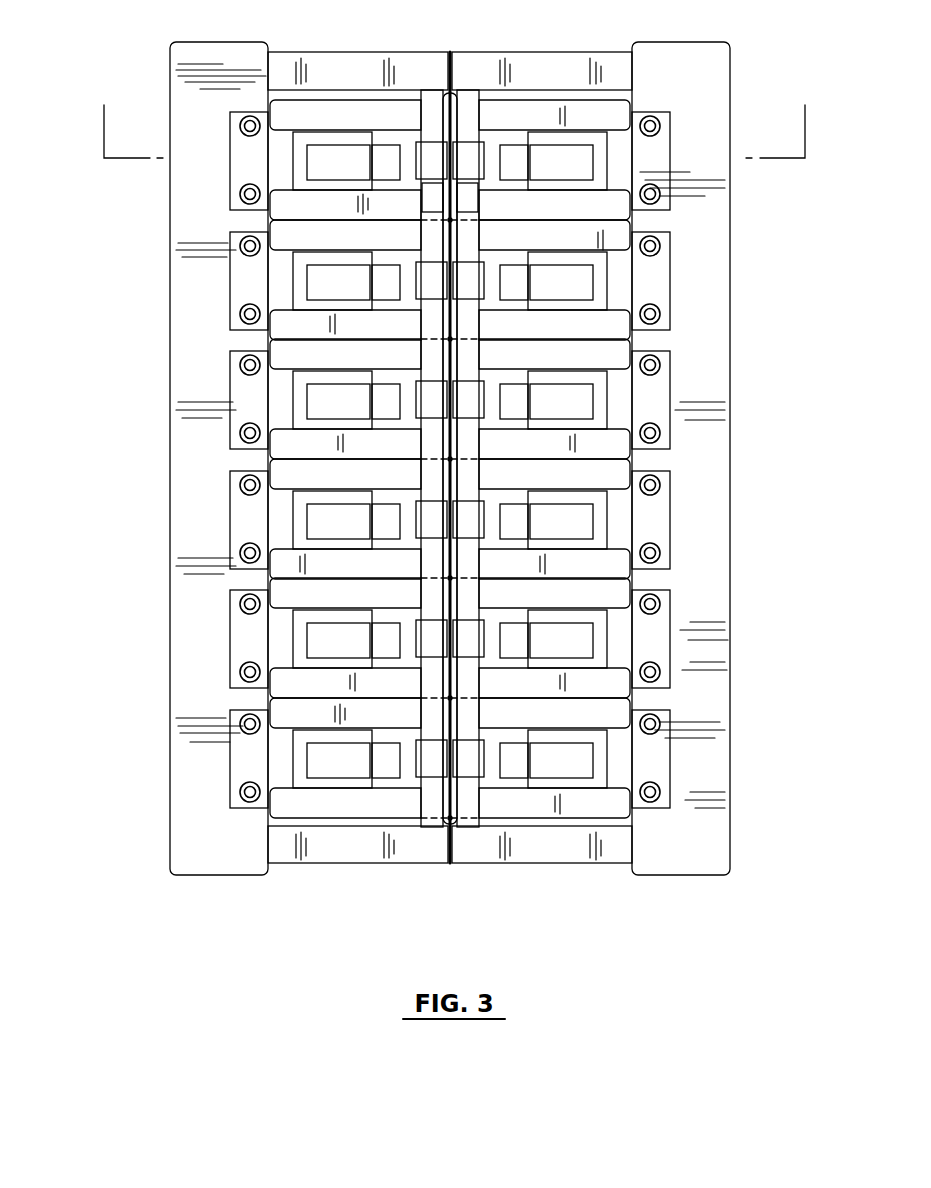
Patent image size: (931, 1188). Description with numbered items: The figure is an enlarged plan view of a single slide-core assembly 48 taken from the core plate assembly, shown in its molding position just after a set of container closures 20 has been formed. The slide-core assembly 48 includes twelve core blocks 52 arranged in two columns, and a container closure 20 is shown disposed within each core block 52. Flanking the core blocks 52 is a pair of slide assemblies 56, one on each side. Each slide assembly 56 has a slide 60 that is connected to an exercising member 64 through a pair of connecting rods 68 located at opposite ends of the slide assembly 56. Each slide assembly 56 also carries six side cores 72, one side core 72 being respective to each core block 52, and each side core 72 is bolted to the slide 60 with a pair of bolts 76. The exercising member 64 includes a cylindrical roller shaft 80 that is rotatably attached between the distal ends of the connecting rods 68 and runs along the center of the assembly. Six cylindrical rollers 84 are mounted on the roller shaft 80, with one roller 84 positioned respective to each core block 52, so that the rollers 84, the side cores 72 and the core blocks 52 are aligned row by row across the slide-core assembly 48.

The container closure 20 is at (322, 176).
The slide-core assembly 48 is at (168, 900).
The core block 52 is at (382, 131).
The slide assembly 56 is at (128, 397).
The slide 60 is at (187, 484).
The exercising member 64 is at (427, 118).
The connecting rod 68 is at (328, 84).
The side core 72 is at (234, 177).
The bolt 76 is at (240, 723).
The roller shaft 80 is at (450, 197).
The roller 84 is at (441, 174).